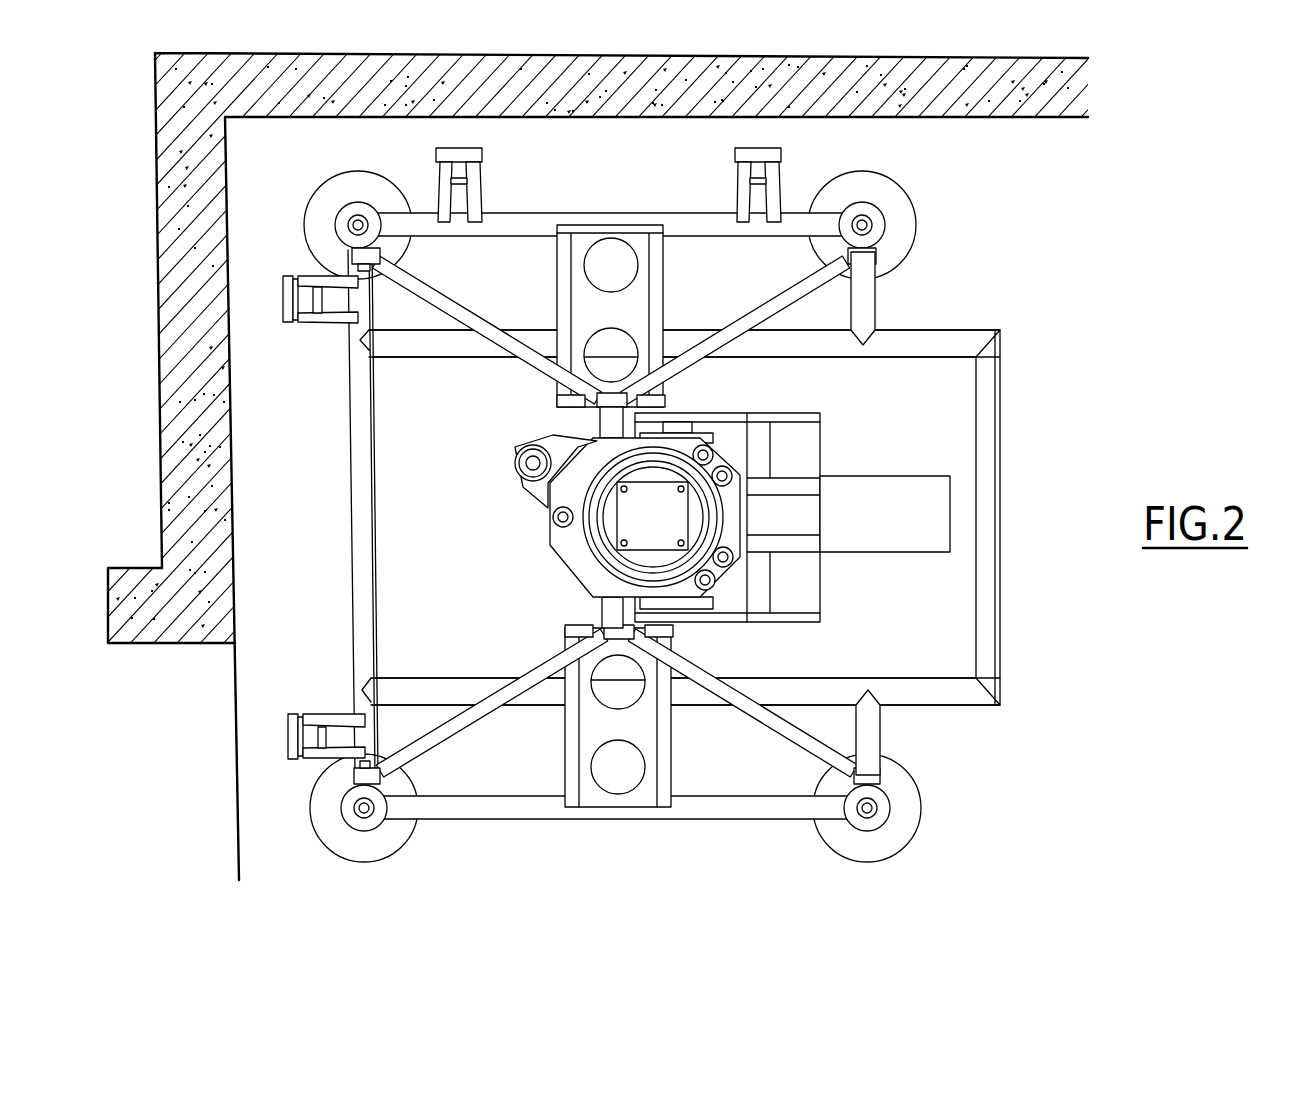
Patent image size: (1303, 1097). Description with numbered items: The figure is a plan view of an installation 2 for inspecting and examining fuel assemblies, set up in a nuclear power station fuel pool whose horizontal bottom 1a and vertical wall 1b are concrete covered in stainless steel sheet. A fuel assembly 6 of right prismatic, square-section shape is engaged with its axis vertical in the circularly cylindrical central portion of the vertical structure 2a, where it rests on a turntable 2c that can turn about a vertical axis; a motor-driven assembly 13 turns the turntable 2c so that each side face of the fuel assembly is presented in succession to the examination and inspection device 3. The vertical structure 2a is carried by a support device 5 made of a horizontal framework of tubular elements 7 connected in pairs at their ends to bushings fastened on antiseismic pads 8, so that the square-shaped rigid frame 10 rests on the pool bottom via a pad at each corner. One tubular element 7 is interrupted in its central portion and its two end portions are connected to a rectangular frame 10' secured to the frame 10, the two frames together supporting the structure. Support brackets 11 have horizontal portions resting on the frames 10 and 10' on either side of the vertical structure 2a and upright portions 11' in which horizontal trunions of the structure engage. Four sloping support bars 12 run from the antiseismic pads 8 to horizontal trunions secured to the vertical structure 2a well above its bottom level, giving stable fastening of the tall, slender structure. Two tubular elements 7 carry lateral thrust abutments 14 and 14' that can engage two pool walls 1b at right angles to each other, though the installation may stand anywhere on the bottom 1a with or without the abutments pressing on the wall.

The horizontal bottom 1a is at (965, 292).
The vertical wall 1b is at (580, 118).
The installation for inspecting and examining fuel assemblies 2 is at (968, 240).
The vertical structure 2a is at (672, 573).
The turntable 2c is at (700, 522).
The examination and inspection device 3 is at (800, 433).
The support device 5 is at (488, 840).
The fuel assembly 6 is at (603, 535).
The tubular elements 7 is at (366, 521).
The antiseismic pads 8 is at (333, 190).
The square-shaped frame 10 is at (612, 549).
The rectangular frame 10' is at (735, 517).
The support brackets 11 is at (584, 555).
The upright portions 11' is at (578, 516).
The sloping support bars 12 is at (757, 303).
The motor-driven assembly 13 is at (530, 463).
The thrust abutment 14 is at (313, 551).
The thrust abutment 14' is at (608, 176).